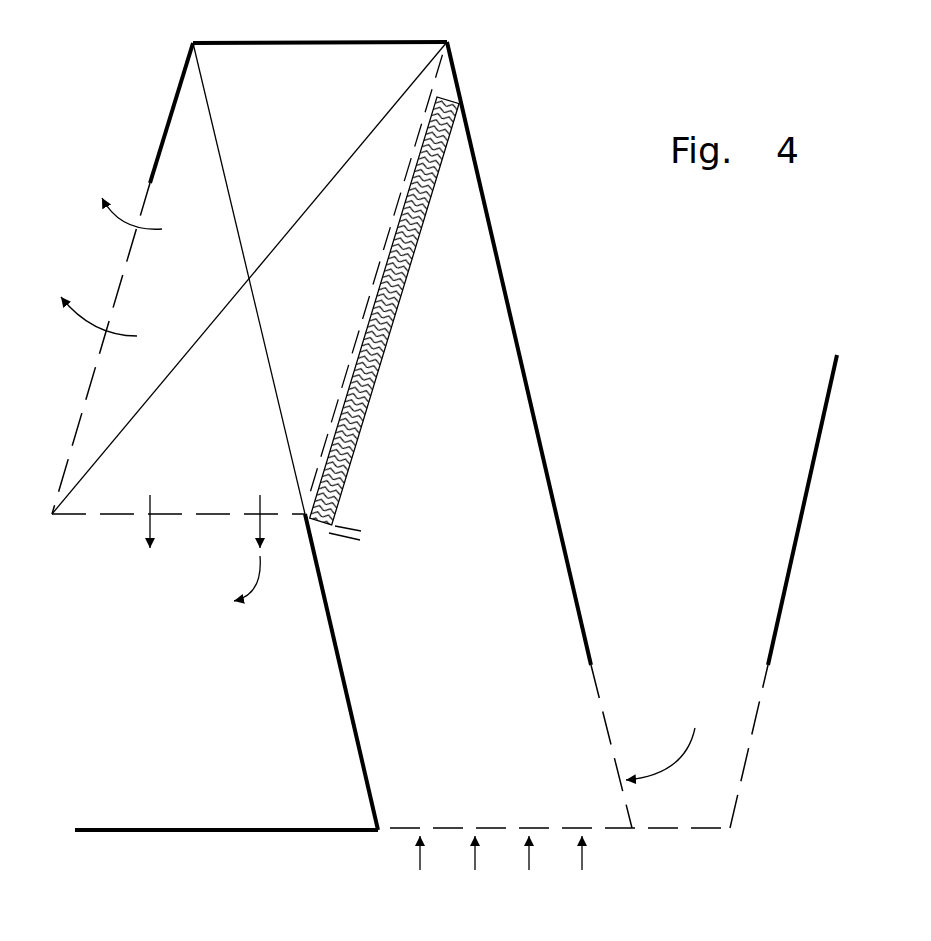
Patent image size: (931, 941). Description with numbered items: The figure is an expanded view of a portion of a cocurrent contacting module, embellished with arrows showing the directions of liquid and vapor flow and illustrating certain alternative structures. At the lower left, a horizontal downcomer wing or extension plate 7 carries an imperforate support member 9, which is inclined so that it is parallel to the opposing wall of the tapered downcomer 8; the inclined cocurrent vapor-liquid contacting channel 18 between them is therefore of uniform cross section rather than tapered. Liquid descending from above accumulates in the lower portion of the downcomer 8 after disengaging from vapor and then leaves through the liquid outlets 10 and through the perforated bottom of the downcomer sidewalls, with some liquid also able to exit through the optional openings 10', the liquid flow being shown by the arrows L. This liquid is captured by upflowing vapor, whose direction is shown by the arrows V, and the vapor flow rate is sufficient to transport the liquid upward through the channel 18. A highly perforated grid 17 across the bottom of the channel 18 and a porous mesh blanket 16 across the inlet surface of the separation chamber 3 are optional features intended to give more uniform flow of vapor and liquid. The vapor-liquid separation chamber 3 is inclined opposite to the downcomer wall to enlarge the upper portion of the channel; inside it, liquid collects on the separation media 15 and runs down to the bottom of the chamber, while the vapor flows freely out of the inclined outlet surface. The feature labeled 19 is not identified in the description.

The vapor-liquid separation chamber 3 is at (356, 38).
The horizontal downcomer wing or extension plate 7 is at (203, 832).
The tapered downcomer 8 is at (589, 607).
The imperforate support member 9 is at (336, 655).
The liquid outlet 10 is at (630, 702).
The optional opening 10' is at (560, 856).
The vapor-liquid separation media 15 is at (143, 404).
The porous mesh blanket 16 is at (434, 189).
The grid 17 is at (480, 830).
The cocurrent vapor-liquid contacting channel 18 is at (477, 624).
The flow direction 19 is at (206, 515).
The vapor flow arrows V is at (243, 552).
The liquid flow arrows L is at (467, 623).